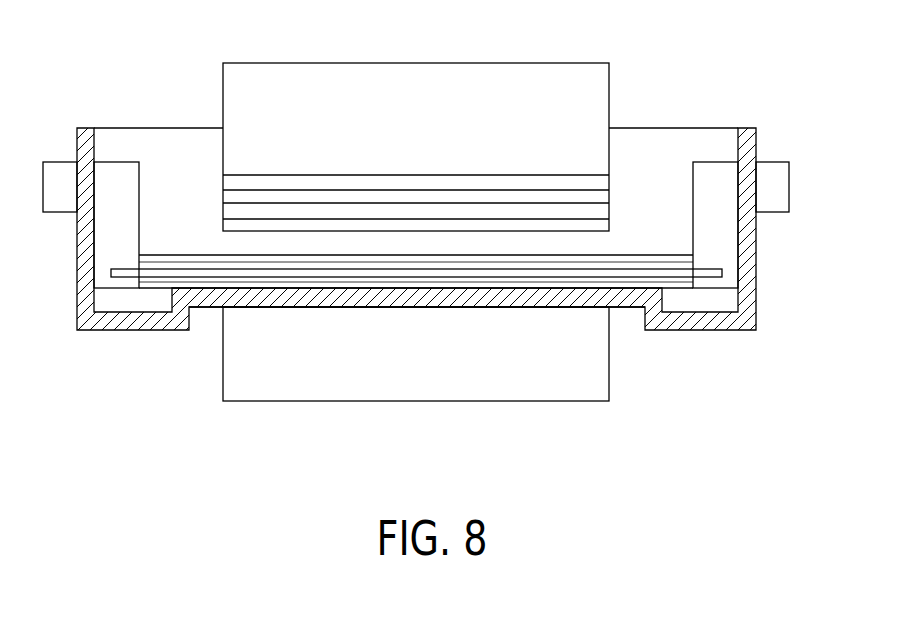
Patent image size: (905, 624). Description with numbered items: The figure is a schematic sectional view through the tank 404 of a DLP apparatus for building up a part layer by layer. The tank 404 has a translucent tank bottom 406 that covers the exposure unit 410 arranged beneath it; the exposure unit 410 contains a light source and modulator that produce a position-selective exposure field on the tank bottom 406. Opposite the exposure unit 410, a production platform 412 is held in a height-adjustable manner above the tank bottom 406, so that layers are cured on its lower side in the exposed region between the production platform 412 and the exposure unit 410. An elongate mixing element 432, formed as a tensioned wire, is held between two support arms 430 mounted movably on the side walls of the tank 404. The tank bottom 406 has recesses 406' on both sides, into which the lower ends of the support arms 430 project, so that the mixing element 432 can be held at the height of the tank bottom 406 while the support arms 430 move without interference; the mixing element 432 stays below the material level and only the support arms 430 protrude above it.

The tank 404 is at (785, 272).
The tank bottom 406 is at (416, 265).
The recesses 406' is at (412, 331).
The exposure unit 410 is at (256, 385).
The production platform 412 is at (283, 85).
The support arms 430 is at (717, 168).
The elongate mixing element 432 is at (667, 273).